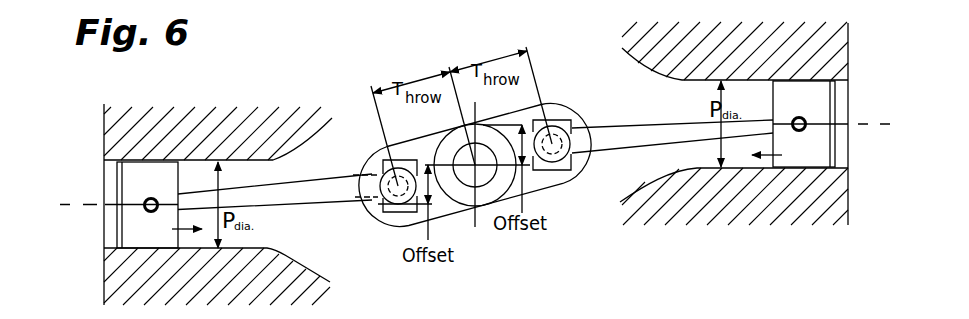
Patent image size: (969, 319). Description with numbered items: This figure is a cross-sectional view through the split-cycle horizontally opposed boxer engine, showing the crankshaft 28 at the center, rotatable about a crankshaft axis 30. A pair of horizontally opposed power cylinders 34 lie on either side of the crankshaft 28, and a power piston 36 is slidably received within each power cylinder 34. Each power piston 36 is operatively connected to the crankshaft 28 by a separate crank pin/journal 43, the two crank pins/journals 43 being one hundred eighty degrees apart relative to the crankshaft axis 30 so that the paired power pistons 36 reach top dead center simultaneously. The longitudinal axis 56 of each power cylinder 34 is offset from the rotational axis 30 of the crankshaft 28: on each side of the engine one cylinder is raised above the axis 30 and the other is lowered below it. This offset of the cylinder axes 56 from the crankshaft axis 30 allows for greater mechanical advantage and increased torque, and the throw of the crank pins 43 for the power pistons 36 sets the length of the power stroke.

The crankshaft 28 is at (490, 140).
The crankshaft axis 30 is at (476, 170).
The power cylinder 34 is at (302, 157).
The power piston 36 is at (118, 225).
The crank pin/journal 43 is at (385, 170).
The longitudinal axis 56 is at (88, 203).